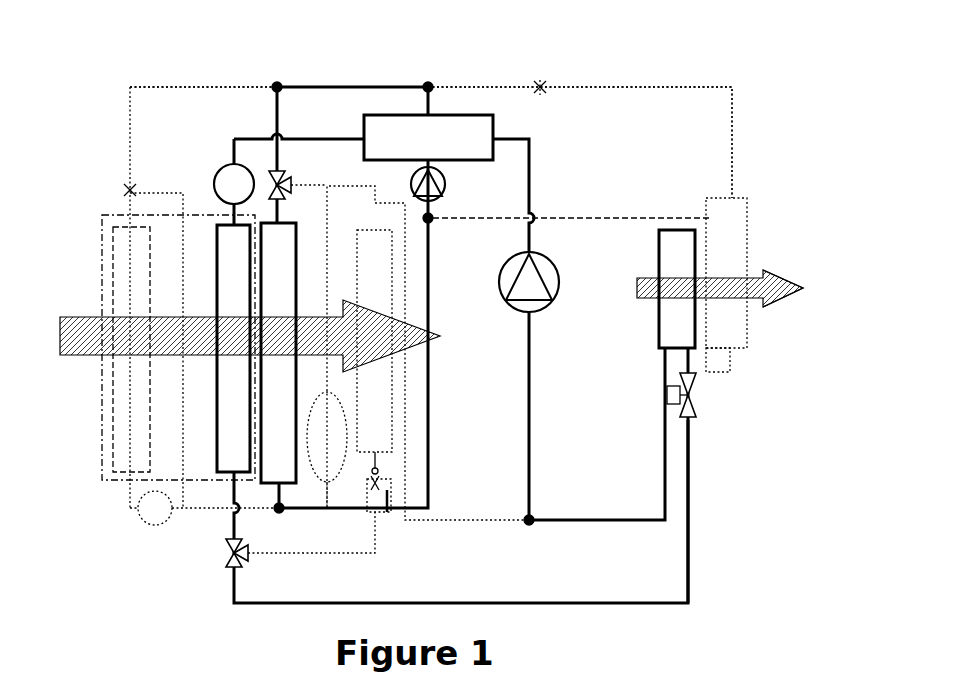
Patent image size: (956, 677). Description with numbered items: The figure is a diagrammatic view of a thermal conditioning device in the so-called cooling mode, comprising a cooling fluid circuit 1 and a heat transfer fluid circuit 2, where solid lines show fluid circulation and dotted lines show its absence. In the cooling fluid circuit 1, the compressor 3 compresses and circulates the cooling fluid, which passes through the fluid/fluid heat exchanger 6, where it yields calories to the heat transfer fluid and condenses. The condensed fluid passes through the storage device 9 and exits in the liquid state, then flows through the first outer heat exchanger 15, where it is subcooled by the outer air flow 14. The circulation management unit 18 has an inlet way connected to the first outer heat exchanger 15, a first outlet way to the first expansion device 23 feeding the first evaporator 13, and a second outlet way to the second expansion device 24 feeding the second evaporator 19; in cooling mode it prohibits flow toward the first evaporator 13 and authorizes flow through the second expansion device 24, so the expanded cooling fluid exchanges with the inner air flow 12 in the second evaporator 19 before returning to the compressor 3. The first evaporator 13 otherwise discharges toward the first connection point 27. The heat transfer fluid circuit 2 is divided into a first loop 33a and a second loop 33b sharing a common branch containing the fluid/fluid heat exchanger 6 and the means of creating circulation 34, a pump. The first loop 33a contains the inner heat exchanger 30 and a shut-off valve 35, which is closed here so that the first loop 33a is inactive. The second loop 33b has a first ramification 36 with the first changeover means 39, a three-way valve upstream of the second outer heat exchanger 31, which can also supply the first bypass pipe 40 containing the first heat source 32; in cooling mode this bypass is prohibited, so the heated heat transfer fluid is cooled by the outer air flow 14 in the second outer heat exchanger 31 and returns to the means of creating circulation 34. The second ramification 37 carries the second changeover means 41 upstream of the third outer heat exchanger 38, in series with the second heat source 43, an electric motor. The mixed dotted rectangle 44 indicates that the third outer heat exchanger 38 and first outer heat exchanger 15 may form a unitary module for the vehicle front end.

The cooling fluid circuit 1 is at (712, 497).
The heat transfer fluid circuit 2 is at (149, 60).
The compressor 3 is at (556, 296).
The fluid/fluid heat exchanger 6 is at (428, 137).
The storage device 9 is at (234, 184).
The inner air flow 12 is at (767, 274).
The first evaporator 13 is at (374, 341).
The outer air flow 14 is at (67, 305).
The first outer heat exchanger 15 is at (233, 348).
The circulation management unit 18 is at (222, 558).
The second evaporator 19 is at (677, 289).
The first expansion device 23 is at (385, 500).
The second expansion device 24 is at (696, 404).
The first connection point 27 is at (529, 525).
The inner heat exchanger 30 is at (720, 285).
The second outer heat exchanger 31 is at (278, 353).
The first heat source 32 is at (327, 450).
The first loop 33a is at (748, 123).
The second loop 33b is at (124, 114).
The means of creating circulation 34 is at (446, 184).
The shut-off valve 35 is at (545, 85).
The first ramification 36 is at (277, 123).
The second ramification 37 is at (130, 152).
The third outer heat exchanger 38 is at (131, 349).
The first changeover means 39 is at (291, 183).
The first bypass pipe 40 is at (192, 178).
The second changeover means 41 is at (127, 185).
The second heat source 43 is at (204, 508).
The unitary module 44 is at (98, 446).